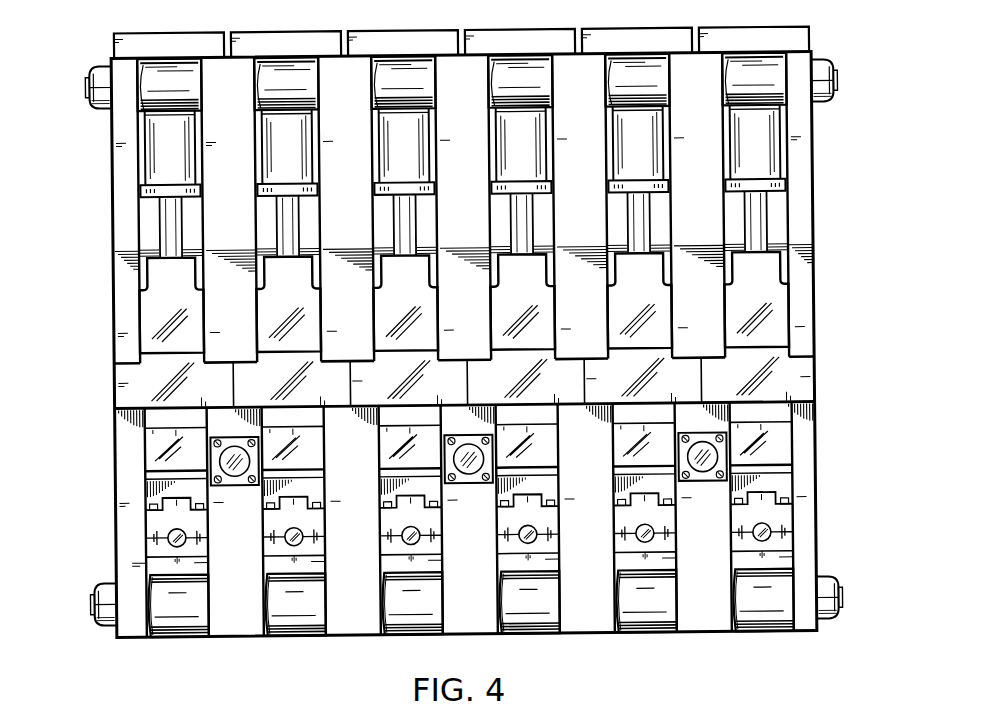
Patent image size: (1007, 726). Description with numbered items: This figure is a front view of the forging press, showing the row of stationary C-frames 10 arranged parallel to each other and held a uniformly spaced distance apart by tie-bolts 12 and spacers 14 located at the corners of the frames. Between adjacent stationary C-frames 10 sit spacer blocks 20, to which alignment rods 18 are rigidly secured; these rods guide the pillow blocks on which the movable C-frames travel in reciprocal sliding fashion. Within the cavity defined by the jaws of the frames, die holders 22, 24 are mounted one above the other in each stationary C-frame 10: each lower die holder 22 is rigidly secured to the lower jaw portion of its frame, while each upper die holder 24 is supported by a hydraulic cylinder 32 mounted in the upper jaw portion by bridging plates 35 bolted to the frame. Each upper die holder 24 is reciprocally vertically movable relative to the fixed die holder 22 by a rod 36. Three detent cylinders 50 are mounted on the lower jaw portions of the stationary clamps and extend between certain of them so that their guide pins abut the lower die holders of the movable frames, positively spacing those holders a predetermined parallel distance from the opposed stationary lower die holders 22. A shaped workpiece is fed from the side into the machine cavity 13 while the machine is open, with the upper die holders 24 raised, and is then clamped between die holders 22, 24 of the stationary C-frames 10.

The stationary C-frame 10 is at (341, 626).
The tie-bolt 12 is at (843, 82).
The machine cavity 13 is at (141, 390).
The spacer 14 is at (778, 86).
The alignment rod 18 is at (770, 545).
The spacer block 20 is at (773, 517).
The die holder 22 is at (776, 447).
The die holder 24 is at (773, 312).
The hydraulic cylinder 32 is at (762, 167).
The bridging plate 35 is at (810, 37).
The rod 36 is at (755, 206).
The detent cylinder 50 is at (468, 472).